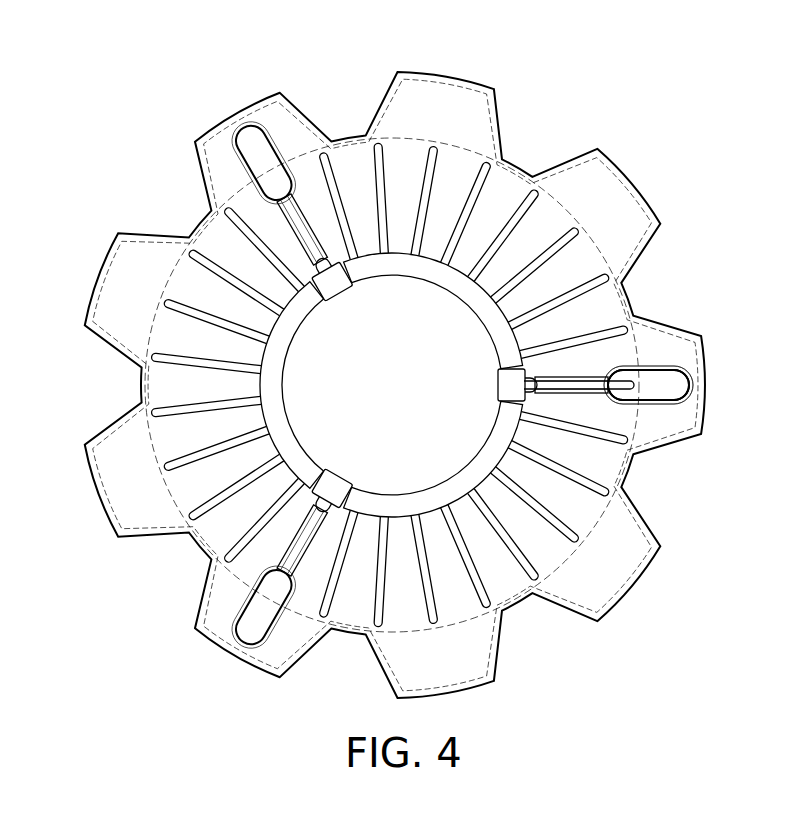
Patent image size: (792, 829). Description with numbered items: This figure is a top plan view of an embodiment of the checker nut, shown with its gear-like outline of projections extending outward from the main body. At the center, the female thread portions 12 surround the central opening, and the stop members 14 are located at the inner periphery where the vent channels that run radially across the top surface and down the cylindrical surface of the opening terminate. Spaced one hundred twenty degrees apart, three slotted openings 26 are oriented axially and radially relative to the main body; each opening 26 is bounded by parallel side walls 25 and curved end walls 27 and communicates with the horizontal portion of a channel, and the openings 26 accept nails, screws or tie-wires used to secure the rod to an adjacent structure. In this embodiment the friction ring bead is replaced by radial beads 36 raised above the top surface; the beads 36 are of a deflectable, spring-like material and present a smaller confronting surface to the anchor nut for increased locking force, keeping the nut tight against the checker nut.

The female thread portions 12 is at (437, 283).
The stop members 14 is at (498, 382).
The parallel side walls 25 is at (273, 140).
The slotted openings 26 is at (667, 380).
The curved end walls 27 is at (237, 137).
The radial beads 36 is at (552, 260).